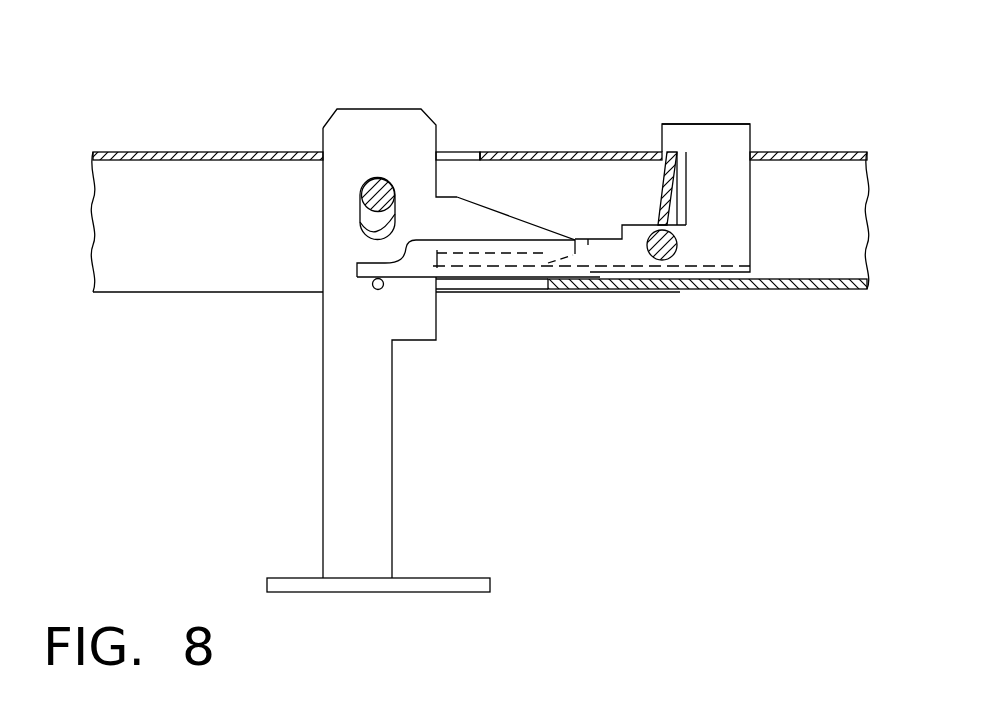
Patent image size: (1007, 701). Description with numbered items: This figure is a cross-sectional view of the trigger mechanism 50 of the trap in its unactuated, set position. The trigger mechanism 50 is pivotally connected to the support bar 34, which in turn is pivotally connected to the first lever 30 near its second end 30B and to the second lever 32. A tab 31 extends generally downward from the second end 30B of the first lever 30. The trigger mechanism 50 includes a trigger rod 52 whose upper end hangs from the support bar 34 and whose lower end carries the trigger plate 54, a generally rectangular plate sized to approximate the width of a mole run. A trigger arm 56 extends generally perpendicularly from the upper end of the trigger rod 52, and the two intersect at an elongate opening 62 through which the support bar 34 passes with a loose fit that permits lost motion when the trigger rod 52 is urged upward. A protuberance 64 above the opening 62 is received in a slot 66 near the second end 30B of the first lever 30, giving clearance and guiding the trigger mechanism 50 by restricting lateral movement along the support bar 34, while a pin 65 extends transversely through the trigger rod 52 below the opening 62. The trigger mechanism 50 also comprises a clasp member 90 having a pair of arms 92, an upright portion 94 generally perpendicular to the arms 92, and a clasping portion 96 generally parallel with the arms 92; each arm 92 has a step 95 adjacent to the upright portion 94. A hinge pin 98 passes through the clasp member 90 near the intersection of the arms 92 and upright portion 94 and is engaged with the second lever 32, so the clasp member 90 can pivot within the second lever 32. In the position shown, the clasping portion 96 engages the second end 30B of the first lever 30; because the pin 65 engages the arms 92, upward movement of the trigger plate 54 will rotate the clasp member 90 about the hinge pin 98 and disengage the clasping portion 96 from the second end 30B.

The first lever 30 is at (170, 152).
The second end of first lever 30B is at (552, 152).
The tab 31 is at (662, 192).
The second lever 32 is at (773, 291).
The support bar 34 is at (362, 188).
The trigger mechanism 50 is at (300, 78).
The trigger rod 52 is at (342, 448).
The trigger plate 54 is at (457, 592).
The trigger arm 56 is at (483, 207).
The opening 62 is at (358, 220).
The protuberance 64 is at (388, 109).
The pin 65 is at (376, 290).
The slot 66 is at (455, 155).
The clasp member 90 is at (712, 97).
The arms 92 is at (472, 268).
The upright portion 94 is at (737, 200).
The step 95 is at (624, 214).
The clasping portion 96 is at (738, 122).
The hinge pin 98 is at (670, 255).